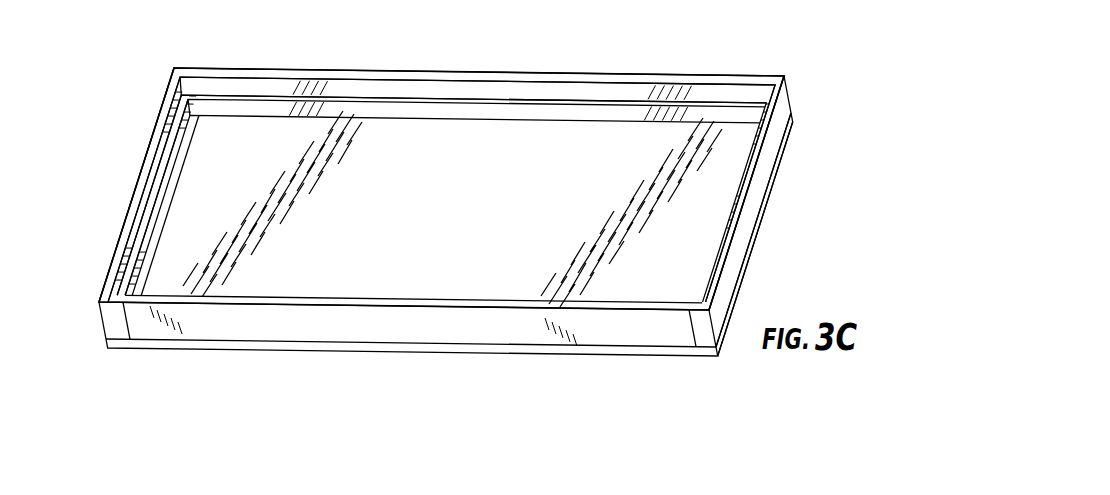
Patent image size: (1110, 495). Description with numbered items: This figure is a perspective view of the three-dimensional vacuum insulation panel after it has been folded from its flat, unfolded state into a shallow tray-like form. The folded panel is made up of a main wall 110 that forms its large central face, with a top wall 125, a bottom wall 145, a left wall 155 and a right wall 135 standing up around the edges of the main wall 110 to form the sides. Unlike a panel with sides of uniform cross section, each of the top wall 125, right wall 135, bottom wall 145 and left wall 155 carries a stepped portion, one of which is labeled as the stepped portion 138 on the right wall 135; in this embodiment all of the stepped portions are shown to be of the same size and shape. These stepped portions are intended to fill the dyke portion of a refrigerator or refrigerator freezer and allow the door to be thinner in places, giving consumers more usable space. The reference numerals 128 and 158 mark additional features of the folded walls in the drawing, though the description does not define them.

The main wall 110 is at (590, 357).
The top wall 125 is at (470, 90).
The ledge 128 is at (414, 96).
The right wall 135 is at (750, 214).
The stepped portion 138 is at (743, 168).
The bottom wall 145 is at (490, 332).
The left wall 155 is at (139, 181).
The left inner edge 158 is at (148, 233).